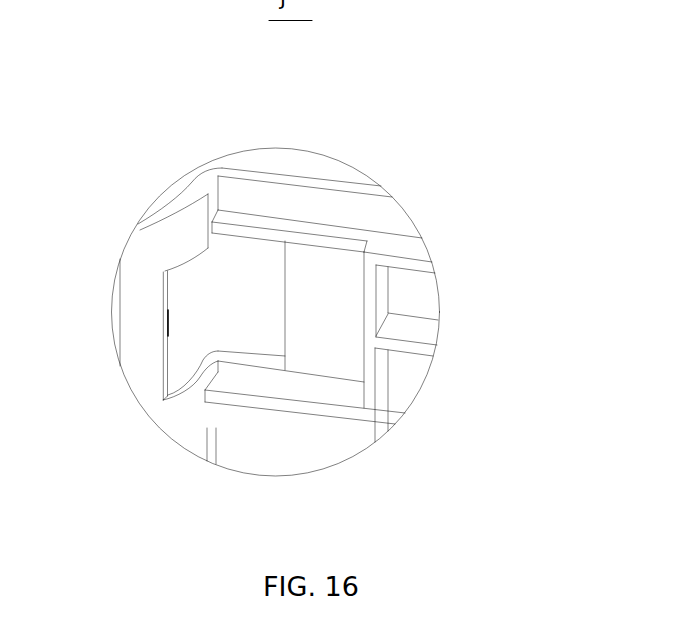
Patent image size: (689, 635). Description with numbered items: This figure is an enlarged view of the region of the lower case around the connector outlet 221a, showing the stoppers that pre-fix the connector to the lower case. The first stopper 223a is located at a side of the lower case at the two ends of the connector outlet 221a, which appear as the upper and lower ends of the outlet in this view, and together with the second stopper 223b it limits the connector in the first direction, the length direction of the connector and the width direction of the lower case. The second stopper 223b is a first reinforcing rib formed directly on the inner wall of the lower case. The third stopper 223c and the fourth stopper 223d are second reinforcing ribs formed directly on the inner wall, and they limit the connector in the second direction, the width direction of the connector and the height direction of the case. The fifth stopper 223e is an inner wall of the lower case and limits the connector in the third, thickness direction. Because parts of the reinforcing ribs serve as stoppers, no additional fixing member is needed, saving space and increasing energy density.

The connector outlet 221a is at (200, 303).
The first stopper 223a is at (208, 193).
The second stopper 223b is at (365, 288).
The third stopper 223c is at (296, 237).
The fourth stopper 223d is at (332, 390).
The fifth stopper 223e is at (337, 330).